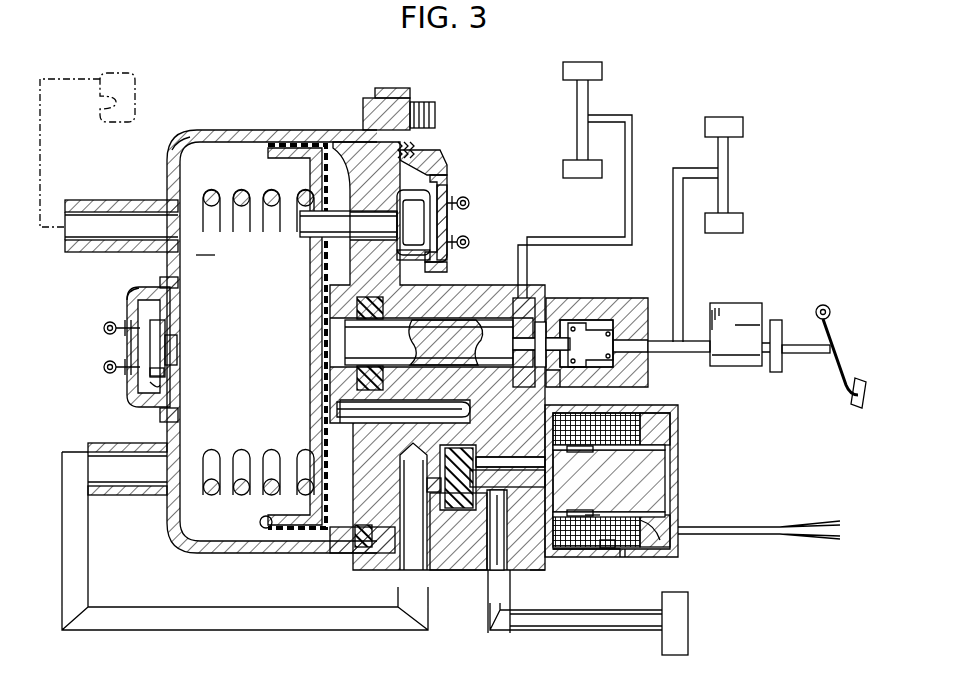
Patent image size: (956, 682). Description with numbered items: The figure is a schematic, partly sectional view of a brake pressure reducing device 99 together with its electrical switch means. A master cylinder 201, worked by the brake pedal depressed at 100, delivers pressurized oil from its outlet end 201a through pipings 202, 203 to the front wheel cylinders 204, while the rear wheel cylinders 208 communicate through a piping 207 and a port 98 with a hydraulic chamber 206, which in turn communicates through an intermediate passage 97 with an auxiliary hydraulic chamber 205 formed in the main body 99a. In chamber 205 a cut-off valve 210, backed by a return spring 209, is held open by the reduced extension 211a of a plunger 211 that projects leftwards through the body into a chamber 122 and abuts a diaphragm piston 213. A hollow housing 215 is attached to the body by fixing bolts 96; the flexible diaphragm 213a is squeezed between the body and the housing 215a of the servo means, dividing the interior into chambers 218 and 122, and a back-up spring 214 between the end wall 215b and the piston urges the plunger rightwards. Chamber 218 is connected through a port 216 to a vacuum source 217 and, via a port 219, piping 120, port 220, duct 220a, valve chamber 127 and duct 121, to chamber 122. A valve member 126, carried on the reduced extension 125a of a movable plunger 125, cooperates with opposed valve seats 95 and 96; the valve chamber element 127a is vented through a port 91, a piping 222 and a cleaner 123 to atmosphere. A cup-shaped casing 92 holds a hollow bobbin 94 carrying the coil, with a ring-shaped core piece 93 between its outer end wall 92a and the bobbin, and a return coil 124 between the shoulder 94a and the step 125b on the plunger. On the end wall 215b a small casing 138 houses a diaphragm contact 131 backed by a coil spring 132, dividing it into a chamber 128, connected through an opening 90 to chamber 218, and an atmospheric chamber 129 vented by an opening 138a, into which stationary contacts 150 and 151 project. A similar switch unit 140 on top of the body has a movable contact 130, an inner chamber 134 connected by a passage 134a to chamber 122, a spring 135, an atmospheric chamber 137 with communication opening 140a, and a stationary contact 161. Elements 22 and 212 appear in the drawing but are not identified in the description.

The lead wire 22 is at (590, 518).
The opening 90 is at (180, 351).
The port 91 is at (490, 580).
The cup-shaped casing 92 is at (640, 550).
The outer end wall 92a is at (680, 490).
The ring-shaped core piece 93 is at (665, 430).
The hollow bobbin 94 is at (655, 545).
The inside shoulder 94a is at (605, 557).
The valve seat 95 is at (410, 492).
The fixing bolt / right-hand valve seat 96 is at (371, 110).
The intermediate passage 97 is at (558, 336).
The port 98 is at (522, 308).
The pressure reducing device 99 is at (490, 290).
The main body 99a is at (527, 415).
The brake pedal 100 is at (848, 392).
The piping 120 is at (225, 618).
The duct 121 is at (408, 423).
The second servo chamber 122 is at (625, 420).
The cleaner 123 is at (675, 622).
The return coil 124 is at (610, 548).
The movable plunger 125 is at (668, 472).
The reduced extension 125a is at (540, 572).
The step 125b is at (590, 458).
The valve member 126 is at (458, 520).
The valve chamber 127 is at (440, 495).
The valve chamber element 127a is at (490, 560).
The chamber 128 is at (165, 334).
The chamber 129 is at (145, 346).
The movable contact 130 is at (448, 222).
The diaphragm contact 131 is at (150, 382).
The coil spring 132 is at (165, 370).
The inner chamber 134 is at (405, 213).
The passage 134a is at (315, 236).
The coil spring 135 is at (386, 258).
The chamber 137 is at (443, 178).
The casing 138 is at (135, 295).
The opening 138a is at (128, 310).
The vacuum-operated switch unit 140 is at (420, 160).
The communication opening 140a is at (450, 273).
The stationary contact 150 is at (103, 367).
The stationary contact 151 is at (103, 325).
The stationary contact 161 is at (468, 200).
The master cylinder 201 is at (738, 366).
The outlet end 201a is at (708, 328).
The piping 202 is at (662, 352).
The piping 203 is at (677, 232).
The front wheel cylinders 204 is at (732, 140).
The auxiliary hydraulic chamber 205 is at (600, 318).
The hydraulic chamber 206 is at (540, 322).
The piping 207 is at (625, 206).
The rear wheel cylinders 208 is at (577, 140).
The return spring 209 is at (618, 328).
The cut-off valve 210 is at (585, 320).
The plunger 211 is at (458, 351).
The reduced extension 211a is at (556, 374).
The piston rod 212 is at (535, 346).
The diaphragm piston 213 is at (310, 282).
The flexible diaphragm 213a is at (264, 545).
The back-up spring 214 is at (210, 191).
The servo means / hollow housing 215 is at (298, 130).
The housing 215a is at (188, 138).
The outer end wall 215b is at (162, 432).
The port 216 is at (132, 222).
The vacuum source 217 is at (131, 76).
The first servo chamber 218 is at (198, 257).
The port 219 is at (128, 478).
The port 220 is at (395, 552).
The duct 220a is at (432, 486).
The piping 222 is at (596, 632).